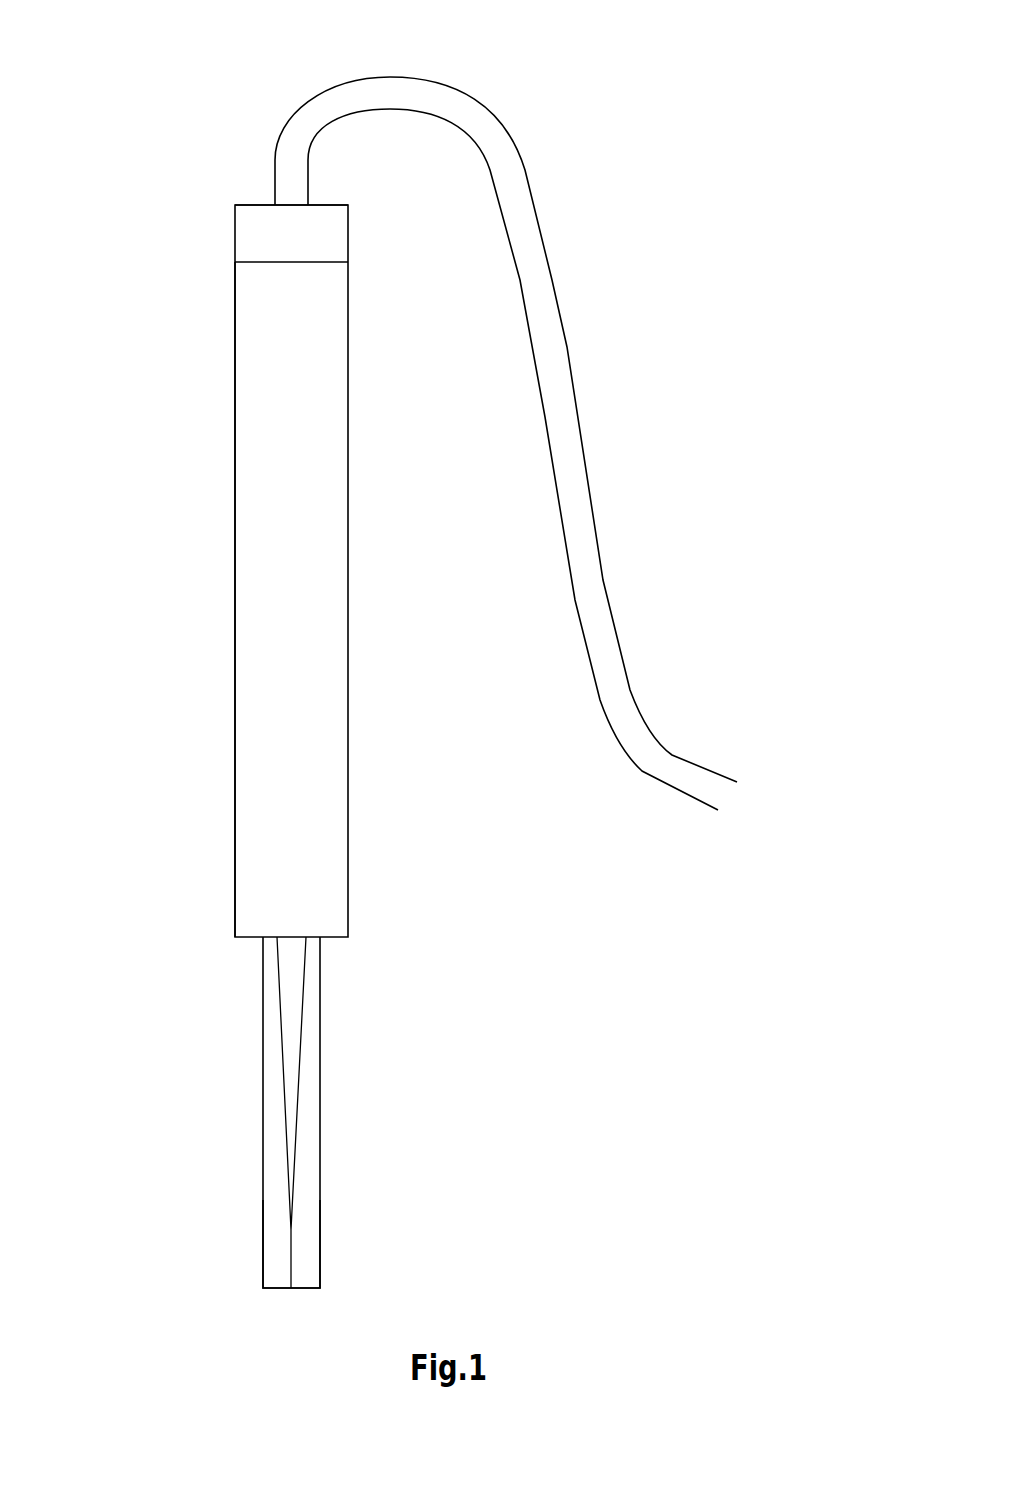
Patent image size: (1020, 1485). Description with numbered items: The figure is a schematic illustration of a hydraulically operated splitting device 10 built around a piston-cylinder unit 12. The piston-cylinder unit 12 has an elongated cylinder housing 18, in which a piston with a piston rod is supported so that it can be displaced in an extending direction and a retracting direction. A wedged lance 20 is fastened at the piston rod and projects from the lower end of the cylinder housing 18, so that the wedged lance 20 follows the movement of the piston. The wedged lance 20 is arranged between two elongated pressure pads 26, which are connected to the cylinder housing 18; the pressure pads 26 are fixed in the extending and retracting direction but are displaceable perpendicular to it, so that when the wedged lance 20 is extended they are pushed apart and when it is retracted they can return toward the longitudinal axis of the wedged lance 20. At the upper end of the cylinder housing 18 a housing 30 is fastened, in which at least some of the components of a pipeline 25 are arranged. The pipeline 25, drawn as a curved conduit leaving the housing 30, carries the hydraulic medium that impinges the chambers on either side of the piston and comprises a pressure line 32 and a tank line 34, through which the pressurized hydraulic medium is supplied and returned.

The splitting device 10 is at (192, 97).
The piston-cylinder unit 12 is at (207, 263).
The cylinder housing 18 is at (248, 460).
The wedged lance 20 is at (293, 997).
The pipeline 25 is at (587, 175).
The pressure pads 26 is at (272, 1245).
The housing 30 is at (332, 233).
The pressure line 32 is at (545, 417).
The tank line 34 is at (567, 347).